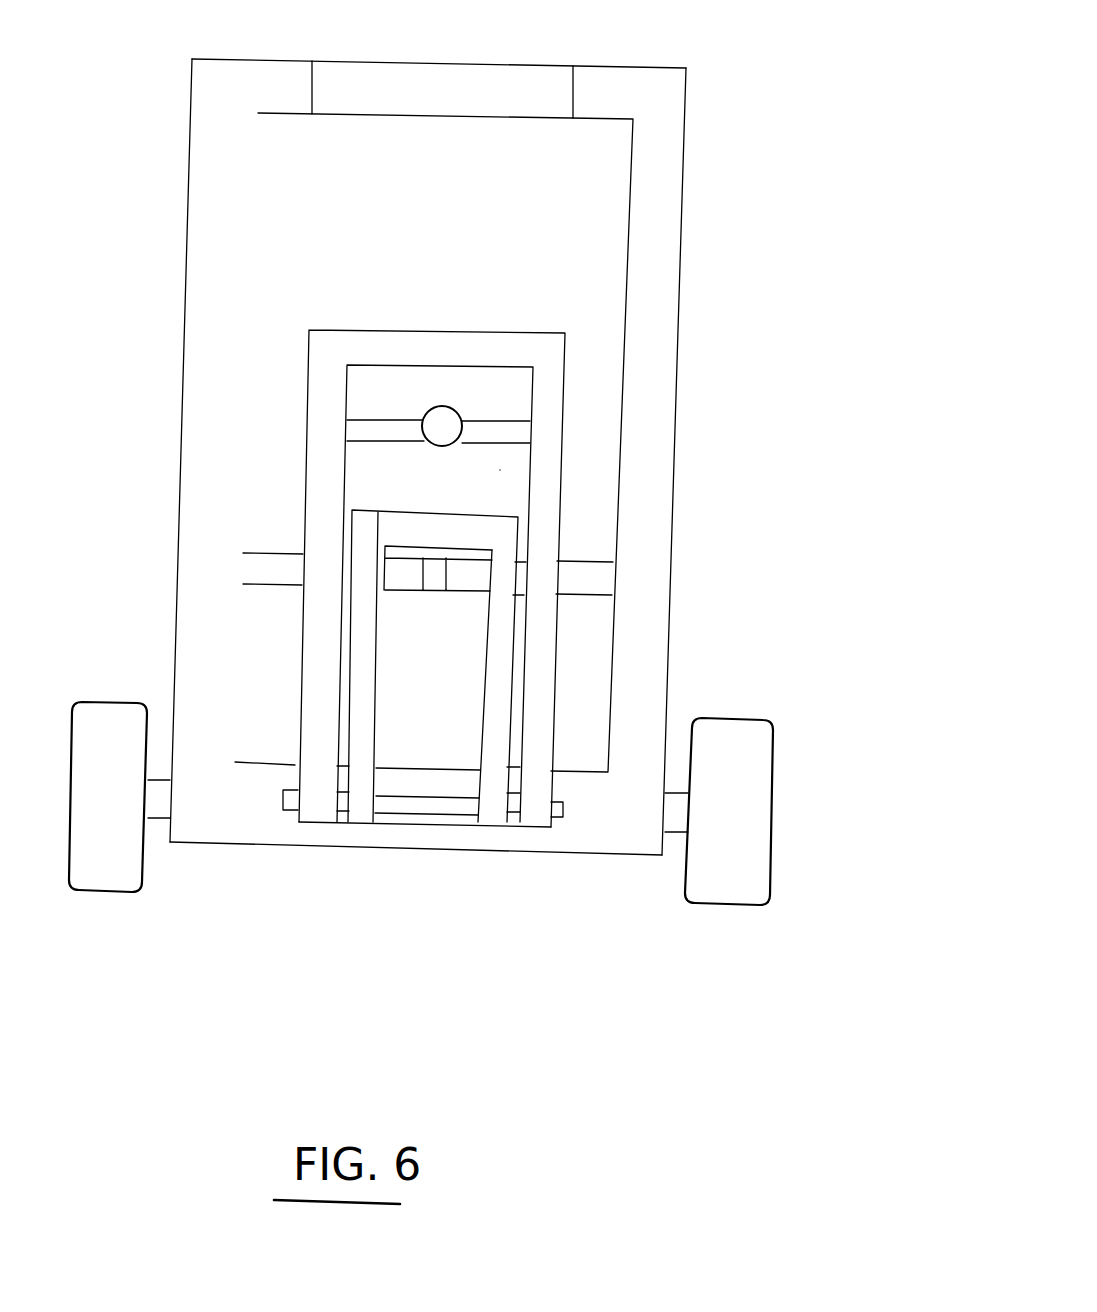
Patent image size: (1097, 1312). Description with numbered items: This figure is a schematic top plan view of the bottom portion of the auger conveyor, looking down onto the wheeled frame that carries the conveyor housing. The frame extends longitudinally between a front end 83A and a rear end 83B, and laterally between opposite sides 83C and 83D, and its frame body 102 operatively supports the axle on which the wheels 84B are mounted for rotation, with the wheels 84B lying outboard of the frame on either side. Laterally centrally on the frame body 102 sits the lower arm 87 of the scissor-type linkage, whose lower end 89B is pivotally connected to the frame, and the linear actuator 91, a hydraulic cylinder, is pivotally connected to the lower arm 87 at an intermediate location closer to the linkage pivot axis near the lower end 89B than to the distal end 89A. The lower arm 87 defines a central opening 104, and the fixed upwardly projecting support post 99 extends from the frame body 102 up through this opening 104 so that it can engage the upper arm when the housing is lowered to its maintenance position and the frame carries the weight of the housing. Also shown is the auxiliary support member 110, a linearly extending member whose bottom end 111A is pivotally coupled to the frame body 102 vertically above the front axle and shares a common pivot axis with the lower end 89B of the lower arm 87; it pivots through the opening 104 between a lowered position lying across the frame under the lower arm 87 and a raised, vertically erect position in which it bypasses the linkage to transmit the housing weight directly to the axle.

The front end 83A is at (587, 857).
The rear end 83B is at (645, 68).
The side 83C is at (678, 501).
The side 83D is at (177, 470).
The frame body 102 is at (653, 637).
The lower end of the lower arm 89B is at (565, 350).
The lower arm 87 is at (565, 393).
The linear actuator 91 is at (462, 408).
The opening 104 is at (516, 484).
The auxiliary support member 110 is at (358, 662).
The support post 99 is at (428, 583).
The bottom end 111A is at (377, 818).
The distal end 89A is at (292, 815).
The wheels 84B is at (752, 717).